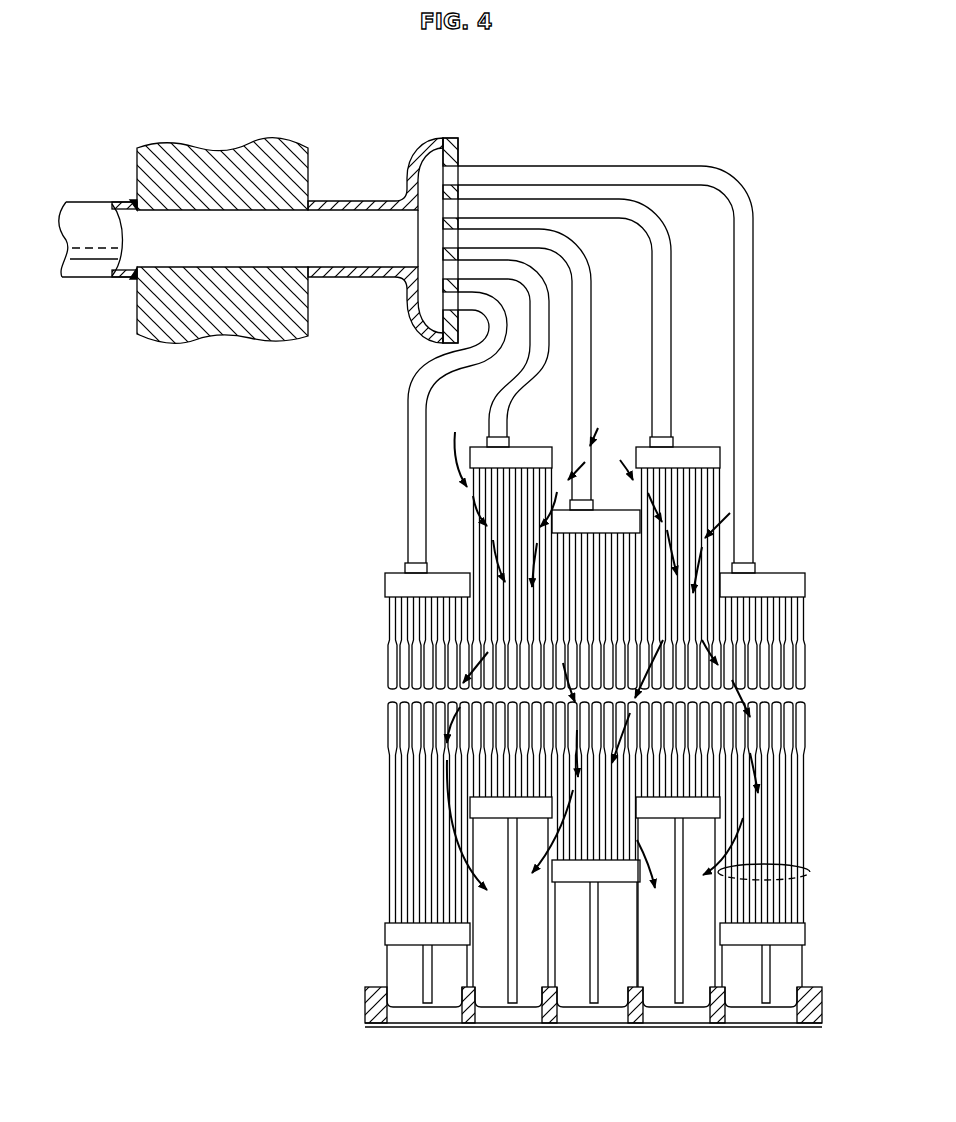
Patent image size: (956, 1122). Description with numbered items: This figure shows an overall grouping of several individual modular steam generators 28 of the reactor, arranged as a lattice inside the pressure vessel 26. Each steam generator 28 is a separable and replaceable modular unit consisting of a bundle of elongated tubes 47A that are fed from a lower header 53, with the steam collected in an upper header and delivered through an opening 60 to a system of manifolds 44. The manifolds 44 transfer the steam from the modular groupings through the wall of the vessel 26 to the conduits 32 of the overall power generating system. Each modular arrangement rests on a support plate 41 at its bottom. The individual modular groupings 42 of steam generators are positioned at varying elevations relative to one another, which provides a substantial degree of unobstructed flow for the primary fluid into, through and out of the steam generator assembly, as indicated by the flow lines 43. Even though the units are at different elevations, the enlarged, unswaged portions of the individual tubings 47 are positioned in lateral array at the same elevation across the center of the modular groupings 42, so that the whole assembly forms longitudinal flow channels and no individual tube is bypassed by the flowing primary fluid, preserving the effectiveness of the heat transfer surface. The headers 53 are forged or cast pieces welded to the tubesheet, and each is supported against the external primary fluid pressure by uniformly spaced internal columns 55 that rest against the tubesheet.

The pressure vessel 26 is at (192, 333).
The system of manifolds 44 is at (433, 172).
The conduit for extracting steam 32 is at (406, 410).
The flow lines 43 is at (495, 548).
The opening 60 is at (508, 441).
The modular groupings 42 is at (808, 869).
The tubings 47 is at (396, 666).
The elongated tubes 47A is at (797, 825).
The steam generator 28 is at (362, 720).
The header 53 is at (503, 808).
The columns 55 is at (672, 810).
The support plate 41 is at (377, 1027).